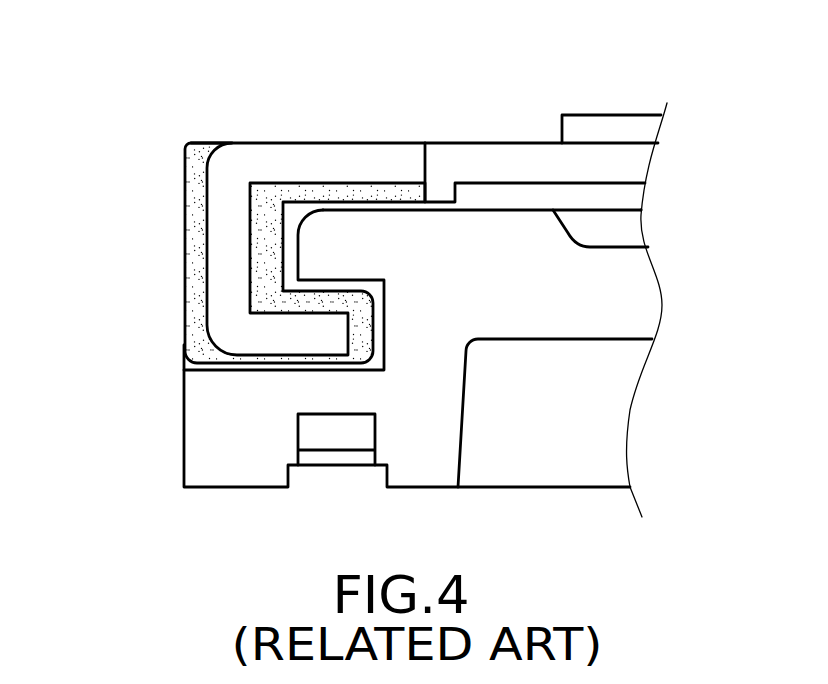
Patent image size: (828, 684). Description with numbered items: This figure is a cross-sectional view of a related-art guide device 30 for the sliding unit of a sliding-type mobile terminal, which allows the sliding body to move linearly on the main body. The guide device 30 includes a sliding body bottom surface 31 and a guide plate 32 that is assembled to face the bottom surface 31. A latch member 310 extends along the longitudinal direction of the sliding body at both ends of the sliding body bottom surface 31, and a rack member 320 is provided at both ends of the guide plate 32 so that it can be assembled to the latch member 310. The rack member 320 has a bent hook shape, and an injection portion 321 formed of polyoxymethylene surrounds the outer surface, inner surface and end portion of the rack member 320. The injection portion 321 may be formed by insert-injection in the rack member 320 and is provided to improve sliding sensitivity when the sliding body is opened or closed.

The guide device 30 is at (482, 49).
The sliding body bottom surface 31 is at (415, 407).
The latch member 310 is at (386, 333).
The guide plate 32 is at (358, 160).
The rack member 320 is at (223, 242).
The injection portion 321 is at (197, 197).